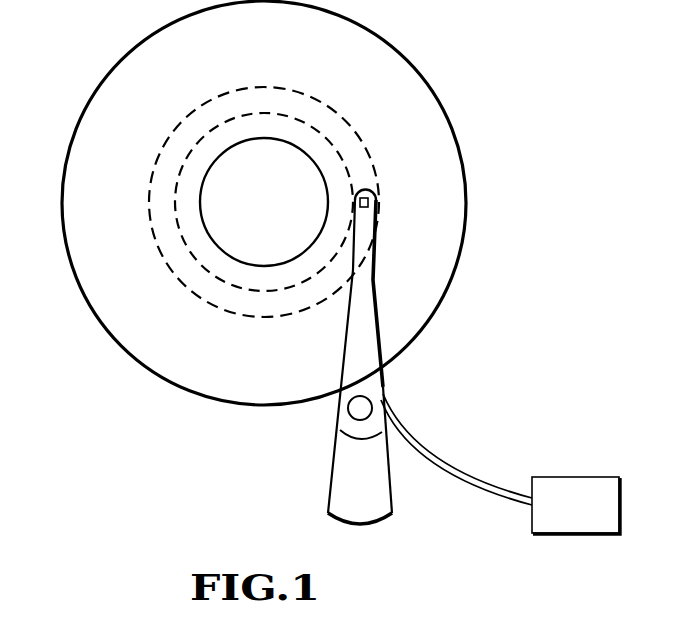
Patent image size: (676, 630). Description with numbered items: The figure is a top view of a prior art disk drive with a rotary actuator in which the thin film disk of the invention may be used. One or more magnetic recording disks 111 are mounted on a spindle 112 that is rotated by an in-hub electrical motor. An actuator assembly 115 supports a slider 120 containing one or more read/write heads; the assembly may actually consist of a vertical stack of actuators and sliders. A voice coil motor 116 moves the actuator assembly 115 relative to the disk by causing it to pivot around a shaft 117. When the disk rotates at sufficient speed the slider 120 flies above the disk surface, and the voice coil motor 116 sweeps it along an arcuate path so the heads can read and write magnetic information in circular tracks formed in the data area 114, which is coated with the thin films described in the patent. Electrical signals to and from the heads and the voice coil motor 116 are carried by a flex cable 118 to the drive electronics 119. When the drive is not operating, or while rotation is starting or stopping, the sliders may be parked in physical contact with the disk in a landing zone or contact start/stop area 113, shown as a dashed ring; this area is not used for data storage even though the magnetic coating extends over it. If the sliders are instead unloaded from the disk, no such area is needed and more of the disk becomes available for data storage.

The magnetic recording disk 111 is at (126, 58).
The spindle 112 is at (213, 198).
The contact start/stop area 113 is at (355, 147).
The data area 114 is at (400, 72).
The actuator assembly 115 is at (365, 313).
The voice coil motor 116 is at (332, 483).
The shaft 117 is at (351, 412).
The flex cable 118 is at (450, 464).
The drive electronics 119 is at (577, 477).
The slider 120 is at (377, 196).